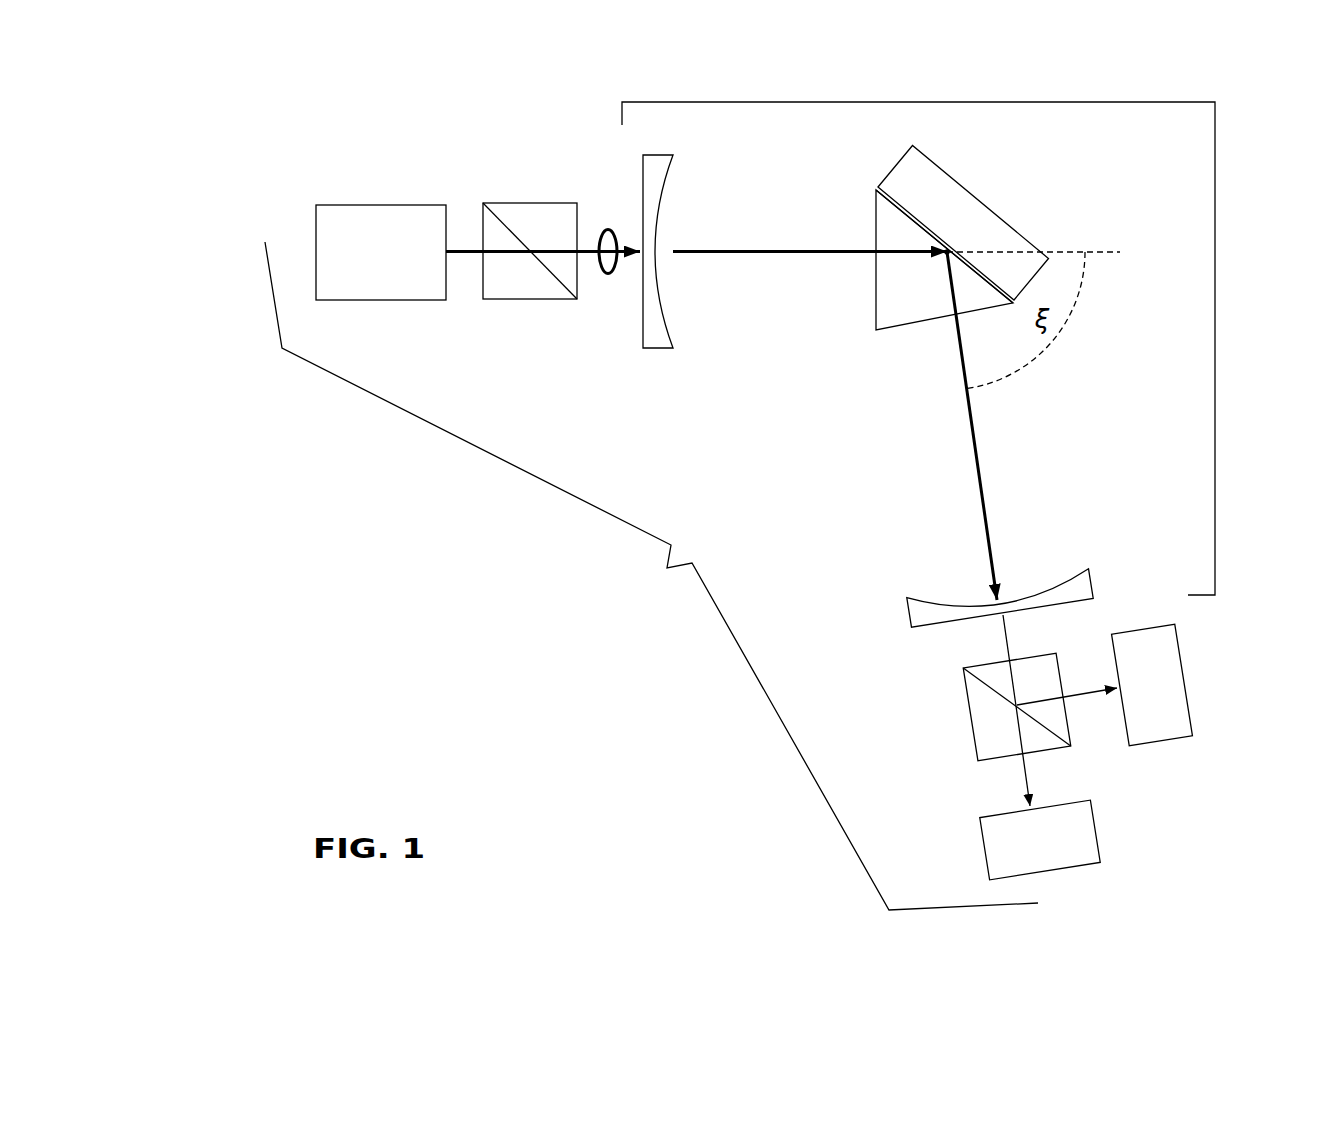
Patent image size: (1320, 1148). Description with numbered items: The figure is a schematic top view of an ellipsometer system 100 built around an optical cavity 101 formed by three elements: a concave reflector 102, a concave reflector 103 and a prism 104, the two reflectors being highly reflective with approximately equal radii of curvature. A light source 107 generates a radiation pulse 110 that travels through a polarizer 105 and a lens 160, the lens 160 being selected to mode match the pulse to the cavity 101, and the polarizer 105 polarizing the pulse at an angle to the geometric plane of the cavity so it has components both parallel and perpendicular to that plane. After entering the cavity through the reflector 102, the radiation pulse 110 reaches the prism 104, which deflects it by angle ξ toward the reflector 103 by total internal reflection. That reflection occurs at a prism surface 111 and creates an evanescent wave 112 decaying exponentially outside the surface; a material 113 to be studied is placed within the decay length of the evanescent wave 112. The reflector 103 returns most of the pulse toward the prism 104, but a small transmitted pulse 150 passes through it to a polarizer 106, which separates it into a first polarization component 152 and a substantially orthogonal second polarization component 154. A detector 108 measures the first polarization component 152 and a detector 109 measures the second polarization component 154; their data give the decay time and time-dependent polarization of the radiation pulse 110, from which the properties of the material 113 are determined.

The ellipsometer system 100 is at (667, 568).
The optical cavity 101 is at (1215, 337).
The reflector 102 is at (658, 350).
The reflector 103 is at (1092, 582).
The prism 104 is at (908, 326).
The polarizer 105 is at (520, 301).
The polarizer 106 is at (970, 713).
The light source 107 is at (363, 302).
The detector 108 is at (980, 850).
The detector 109 is at (1190, 677).
The radiation pulse 110 is at (768, 256).
The prism surface 111 is at (907, 218).
The evanescent wave 112 is at (949, 245).
The material 113 is at (1019, 232).
The transmitted pulse 150 is at (1003, 637).
The first polarization component 152 is at (1025, 778).
The second polarization component 154 is at (1083, 698).
The lens 160 is at (606, 228).